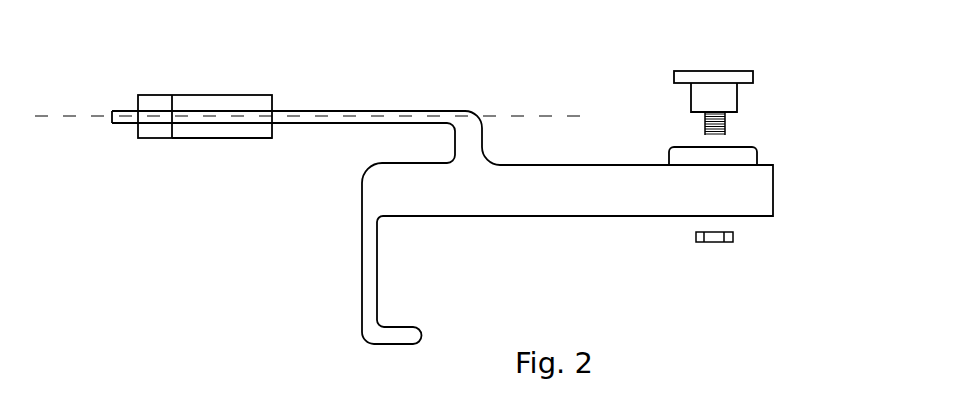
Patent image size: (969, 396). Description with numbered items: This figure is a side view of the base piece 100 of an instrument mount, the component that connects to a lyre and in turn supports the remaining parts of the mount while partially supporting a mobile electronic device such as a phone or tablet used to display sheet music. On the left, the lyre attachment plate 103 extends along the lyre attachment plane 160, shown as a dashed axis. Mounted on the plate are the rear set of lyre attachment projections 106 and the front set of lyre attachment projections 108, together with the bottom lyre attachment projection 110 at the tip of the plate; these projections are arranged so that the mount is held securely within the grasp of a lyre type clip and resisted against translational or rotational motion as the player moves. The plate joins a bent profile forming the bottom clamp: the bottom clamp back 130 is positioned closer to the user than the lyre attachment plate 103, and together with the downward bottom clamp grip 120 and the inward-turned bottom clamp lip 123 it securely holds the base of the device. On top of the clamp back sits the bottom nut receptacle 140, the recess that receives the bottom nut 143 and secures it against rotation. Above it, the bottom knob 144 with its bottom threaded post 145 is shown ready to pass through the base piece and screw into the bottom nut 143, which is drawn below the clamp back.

The base piece 100 is at (472, 114).
The lyre attachment plate 103 is at (370, 120).
The rear set of lyre attachment projections 106 is at (202, 98).
The front set of lyre attachment projections 108 is at (248, 133).
The bottom lyre attachment projection 110 is at (127, 113).
The bottom clamp grip 120 is at (365, 238).
The bottom clamp lip 123 is at (393, 337).
The bottom clamp back 130 is at (659, 216).
The bottom nut receptacle 140 is at (718, 160).
The bottom nut 143 is at (720, 243).
The bottom knob 144 is at (755, 78).
The bottom threaded post 145 is at (705, 125).
The lyre attachment plane 160 is at (65, 117).